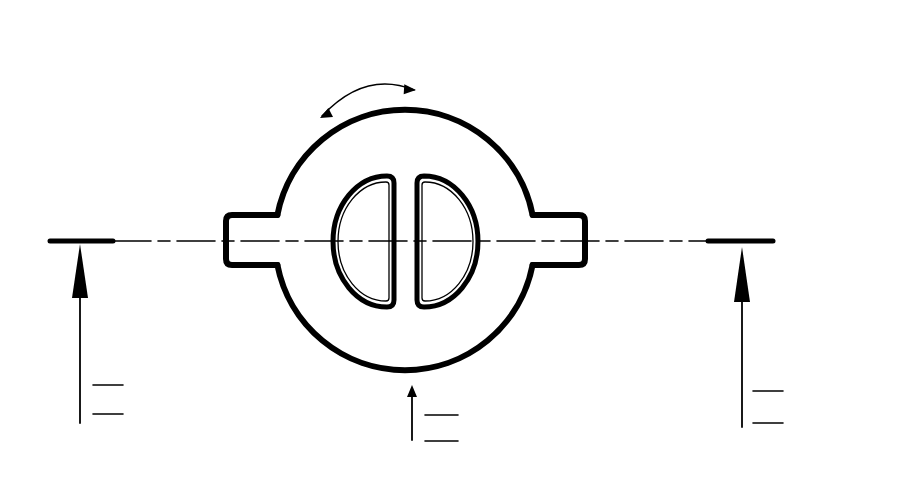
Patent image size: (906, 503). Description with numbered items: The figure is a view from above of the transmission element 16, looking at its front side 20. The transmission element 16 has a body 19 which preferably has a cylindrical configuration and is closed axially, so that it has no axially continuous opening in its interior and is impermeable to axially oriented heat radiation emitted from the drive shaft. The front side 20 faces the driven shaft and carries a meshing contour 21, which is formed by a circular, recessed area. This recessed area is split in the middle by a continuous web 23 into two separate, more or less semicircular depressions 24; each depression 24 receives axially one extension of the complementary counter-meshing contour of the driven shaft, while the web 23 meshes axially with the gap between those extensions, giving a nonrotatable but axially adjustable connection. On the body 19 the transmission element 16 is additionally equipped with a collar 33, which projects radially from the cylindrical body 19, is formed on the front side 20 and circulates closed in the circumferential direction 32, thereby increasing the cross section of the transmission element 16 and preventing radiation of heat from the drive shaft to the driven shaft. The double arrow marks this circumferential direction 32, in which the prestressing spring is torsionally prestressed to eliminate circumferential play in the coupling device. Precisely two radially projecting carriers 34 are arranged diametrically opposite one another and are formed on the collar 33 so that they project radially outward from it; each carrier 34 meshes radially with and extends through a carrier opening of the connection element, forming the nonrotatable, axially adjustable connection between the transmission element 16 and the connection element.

The transmission element 16 is at (626, 150).
The body 19 is at (482, 127).
The front side 20 is at (342, 326).
The meshing contour 21 is at (410, 282).
The web 23 is at (405, 221).
The depressions 24 is at (357, 222).
The circumferential direction 32 is at (358, 92).
The collar 33 is at (435, 127).
The carriers 34 is at (242, 230).